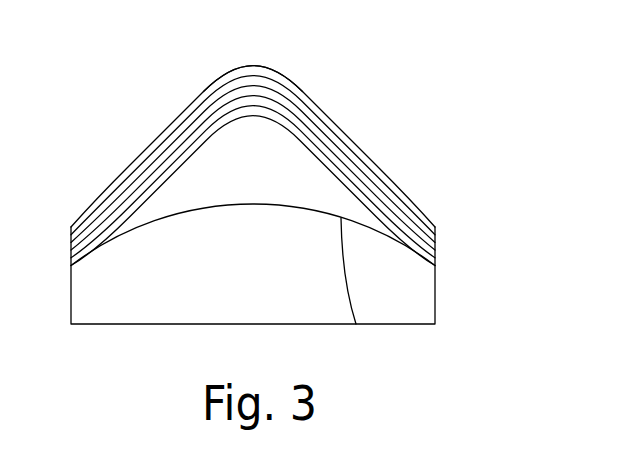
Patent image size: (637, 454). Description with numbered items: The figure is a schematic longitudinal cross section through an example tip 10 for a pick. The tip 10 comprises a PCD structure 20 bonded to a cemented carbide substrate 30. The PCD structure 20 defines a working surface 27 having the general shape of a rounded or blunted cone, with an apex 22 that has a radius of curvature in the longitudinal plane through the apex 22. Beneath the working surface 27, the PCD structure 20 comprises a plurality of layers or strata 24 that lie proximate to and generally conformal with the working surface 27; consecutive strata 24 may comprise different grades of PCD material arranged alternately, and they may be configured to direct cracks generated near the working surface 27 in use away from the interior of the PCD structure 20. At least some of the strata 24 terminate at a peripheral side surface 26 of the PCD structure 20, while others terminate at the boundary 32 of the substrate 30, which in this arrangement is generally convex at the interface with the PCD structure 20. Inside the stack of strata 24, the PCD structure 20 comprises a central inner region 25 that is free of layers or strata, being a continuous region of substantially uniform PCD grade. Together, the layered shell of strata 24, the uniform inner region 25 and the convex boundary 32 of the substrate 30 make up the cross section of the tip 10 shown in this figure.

The tip 10 is at (118, 92).
The PCD structure 20 is at (303, 90).
The apex 22 is at (256, 67).
The strata 24 is at (327, 130).
The inner region 25 is at (297, 170).
The peripheral side surface 26 is at (435, 247).
The working surface 27 is at (390, 178).
The cemented carbide substrate 30 is at (435, 295).
The boundary 32 is at (356, 324).